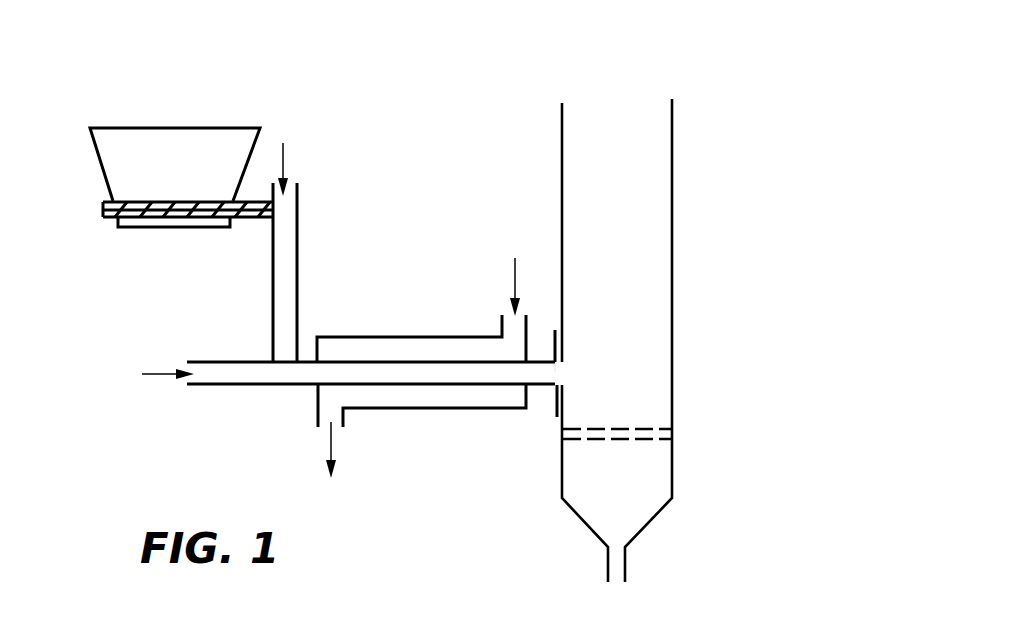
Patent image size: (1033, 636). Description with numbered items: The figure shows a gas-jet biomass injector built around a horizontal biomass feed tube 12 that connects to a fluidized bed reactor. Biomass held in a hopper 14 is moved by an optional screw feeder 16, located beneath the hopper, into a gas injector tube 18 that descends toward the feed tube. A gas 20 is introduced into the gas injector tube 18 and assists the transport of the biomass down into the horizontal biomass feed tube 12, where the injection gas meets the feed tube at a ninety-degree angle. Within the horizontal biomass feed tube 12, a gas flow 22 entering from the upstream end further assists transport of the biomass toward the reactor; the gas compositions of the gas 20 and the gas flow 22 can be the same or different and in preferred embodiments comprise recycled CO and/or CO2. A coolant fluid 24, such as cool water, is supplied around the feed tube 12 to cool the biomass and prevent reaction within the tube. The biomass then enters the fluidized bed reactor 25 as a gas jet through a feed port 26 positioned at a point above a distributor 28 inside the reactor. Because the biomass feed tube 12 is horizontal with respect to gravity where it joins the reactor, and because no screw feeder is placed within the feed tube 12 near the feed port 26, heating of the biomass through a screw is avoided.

The horizontal biomass feed tube 12 is at (258, 384).
The hopper 14 is at (183, 143).
The screw feeder 16 is at (145, 200).
The gas injector tube 18 is at (286, 280).
The gas 20 is at (286, 147).
The gas flow 22 is at (150, 373).
The coolant fluid 24 is at (508, 272).
The reactor column 25 is at (637, 350).
The feed port 26 is at (558, 373).
The distributor 28 is at (665, 437).